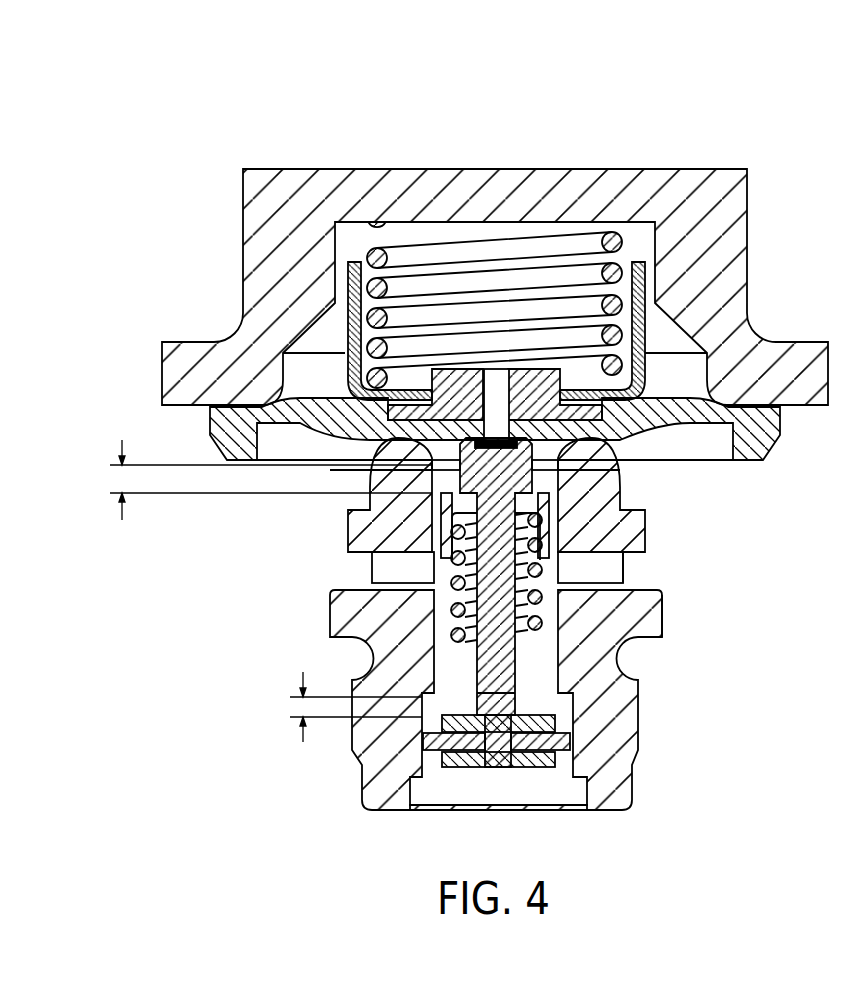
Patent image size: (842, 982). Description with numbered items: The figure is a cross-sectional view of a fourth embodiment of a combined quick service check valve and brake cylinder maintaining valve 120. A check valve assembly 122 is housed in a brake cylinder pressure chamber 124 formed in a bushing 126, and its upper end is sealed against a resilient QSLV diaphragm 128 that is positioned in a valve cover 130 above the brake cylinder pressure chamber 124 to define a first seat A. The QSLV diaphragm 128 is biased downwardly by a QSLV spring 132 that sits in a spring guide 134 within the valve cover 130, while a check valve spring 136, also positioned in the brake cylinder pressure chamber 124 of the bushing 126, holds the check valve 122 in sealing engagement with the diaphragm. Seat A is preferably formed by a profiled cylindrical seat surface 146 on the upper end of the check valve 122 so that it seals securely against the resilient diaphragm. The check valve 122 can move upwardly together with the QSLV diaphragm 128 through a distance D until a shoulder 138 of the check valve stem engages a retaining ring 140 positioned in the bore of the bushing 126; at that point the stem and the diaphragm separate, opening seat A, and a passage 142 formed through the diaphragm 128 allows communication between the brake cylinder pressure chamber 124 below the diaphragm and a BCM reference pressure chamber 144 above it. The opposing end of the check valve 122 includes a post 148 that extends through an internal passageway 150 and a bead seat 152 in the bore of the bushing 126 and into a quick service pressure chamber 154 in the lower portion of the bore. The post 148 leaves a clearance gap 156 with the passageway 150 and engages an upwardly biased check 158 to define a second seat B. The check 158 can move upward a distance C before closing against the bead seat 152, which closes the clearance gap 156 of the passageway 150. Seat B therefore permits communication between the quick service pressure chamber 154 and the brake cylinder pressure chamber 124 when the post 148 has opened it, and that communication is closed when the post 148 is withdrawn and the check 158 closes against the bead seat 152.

The combined quick service check valve and brake cylinder maintaining valve 120 is at (450, 78).
The check valve assembly 122 is at (600, 500).
The brake cylinder pressure chamber 124 is at (533, 662).
The bushing 126 is at (665, 618).
The QSLV diaphragm 128 is at (212, 420).
The valve cover 130 is at (243, 215).
The QSLV spring 132 is at (612, 243).
The spring guide 134 is at (350, 285).
The check valve spring 136 is at (625, 600).
The shoulder 138 is at (565, 470).
The retaining ring 140 is at (575, 452).
The passage 142 is at (512, 386).
The BCM reference pressure chamber 144 is at (414, 230).
The profiled cylindrical seat surface 146 is at (497, 393).
The post 148 is at (545, 584).
The internal passageway 150 is at (625, 648).
The bead seat 152 is at (520, 694).
The quick service pressure chamber 154 is at (572, 758).
The clearance gap 156 is at (467, 660).
The check 158 is at (510, 770).
The first seat A is at (458, 436).
The second seat B is at (443, 690).
The distance C is at (300, 672).
The distance D is at (120, 442).